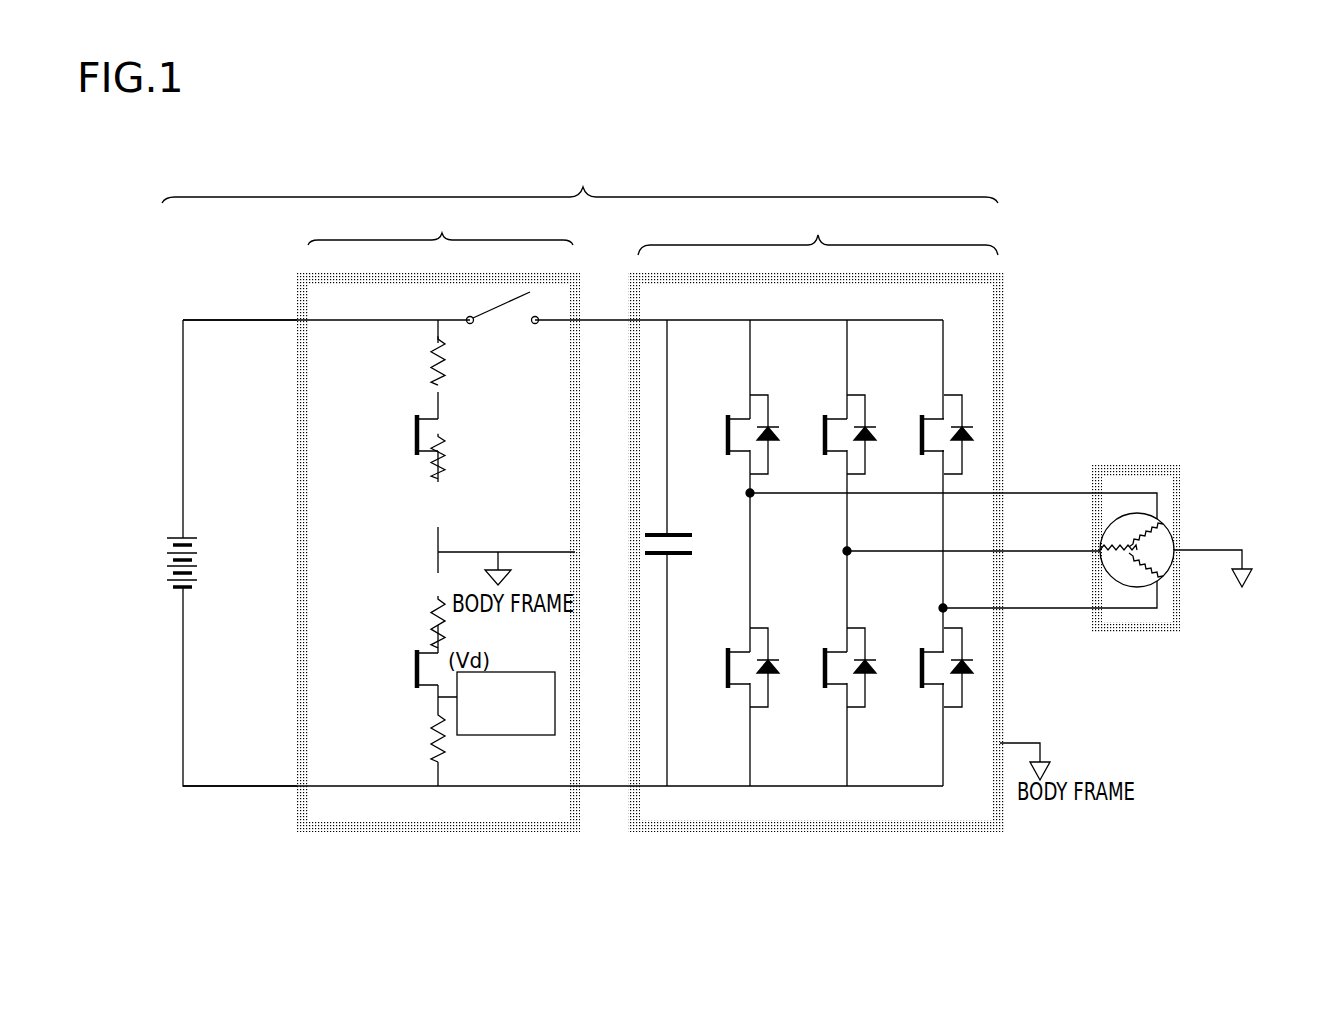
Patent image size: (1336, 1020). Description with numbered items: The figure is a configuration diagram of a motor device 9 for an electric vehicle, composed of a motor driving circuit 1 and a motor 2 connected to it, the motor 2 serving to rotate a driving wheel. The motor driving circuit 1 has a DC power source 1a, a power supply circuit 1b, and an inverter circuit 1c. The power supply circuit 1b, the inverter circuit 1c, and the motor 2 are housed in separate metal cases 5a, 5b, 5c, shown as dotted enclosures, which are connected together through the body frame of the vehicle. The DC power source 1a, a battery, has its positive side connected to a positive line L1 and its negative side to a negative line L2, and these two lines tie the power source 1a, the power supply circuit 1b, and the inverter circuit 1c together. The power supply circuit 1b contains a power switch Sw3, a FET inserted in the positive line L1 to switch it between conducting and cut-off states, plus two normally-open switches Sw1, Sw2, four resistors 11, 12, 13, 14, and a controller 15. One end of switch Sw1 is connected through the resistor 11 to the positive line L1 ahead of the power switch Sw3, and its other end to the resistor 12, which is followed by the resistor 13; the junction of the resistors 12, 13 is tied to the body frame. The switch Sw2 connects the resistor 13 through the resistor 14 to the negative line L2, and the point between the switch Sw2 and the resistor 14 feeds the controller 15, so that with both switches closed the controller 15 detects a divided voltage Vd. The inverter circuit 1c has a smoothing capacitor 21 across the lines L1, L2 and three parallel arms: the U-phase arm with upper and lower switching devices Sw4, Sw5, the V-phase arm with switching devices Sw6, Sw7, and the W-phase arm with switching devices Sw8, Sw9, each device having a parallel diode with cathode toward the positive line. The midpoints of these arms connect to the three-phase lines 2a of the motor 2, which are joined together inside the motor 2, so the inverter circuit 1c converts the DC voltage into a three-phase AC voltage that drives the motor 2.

The motor driving circuit 1 is at (580, 180).
The DC power source 1a is at (193, 535).
The power supply circuit 1b is at (440, 226).
The inverter circuit 1c is at (818, 230).
The motor 2 is at (1133, 587).
The three-phase lines 2a is at (1068, 492).
The metal case 5a is at (573, 297).
The metal case 5b is at (1008, 293).
The metal case 5c is at (1110, 465).
The motor device 9 is at (1170, 161).
The resistor 11 is at (428, 370).
The resistor 12 is at (428, 503).
The resistor 13 is at (427, 602).
The resistor 14 is at (427, 745).
The controller 15 is at (532, 671).
The smoothing capacitor 21 is at (677, 533).
The positive line L1 is at (217, 319).
The negative line L2 is at (217, 785).
The normally-open switch Sw1 is at (413, 422).
The normally-open switch Sw2 is at (413, 657).
The power switch Sw3 is at (501, 316).
The switching device Sw4 is at (727, 427).
The switching device Sw5 is at (727, 660).
The switching device Sw6 is at (824, 427).
The switching device Sw7 is at (824, 660).
The switching device Sw8 is at (921, 427).
The switching device Sw9 is at (921, 660).